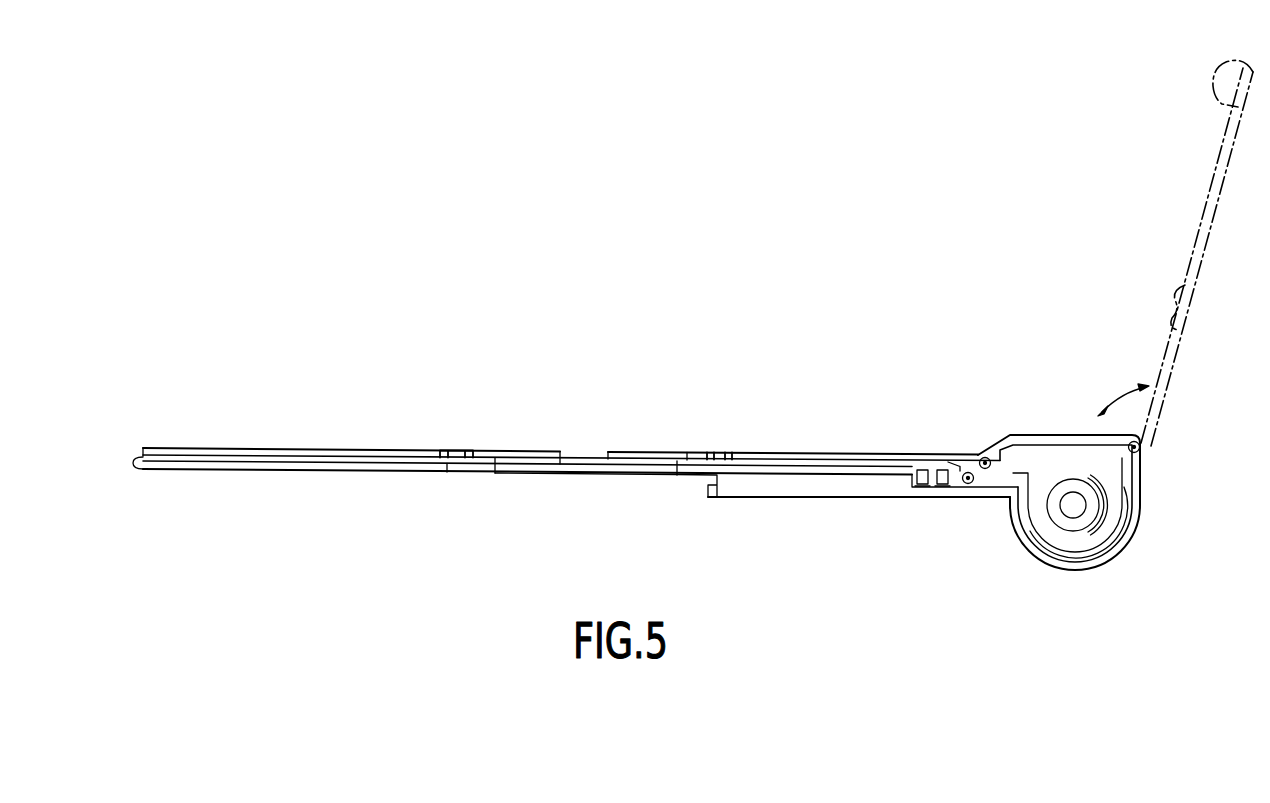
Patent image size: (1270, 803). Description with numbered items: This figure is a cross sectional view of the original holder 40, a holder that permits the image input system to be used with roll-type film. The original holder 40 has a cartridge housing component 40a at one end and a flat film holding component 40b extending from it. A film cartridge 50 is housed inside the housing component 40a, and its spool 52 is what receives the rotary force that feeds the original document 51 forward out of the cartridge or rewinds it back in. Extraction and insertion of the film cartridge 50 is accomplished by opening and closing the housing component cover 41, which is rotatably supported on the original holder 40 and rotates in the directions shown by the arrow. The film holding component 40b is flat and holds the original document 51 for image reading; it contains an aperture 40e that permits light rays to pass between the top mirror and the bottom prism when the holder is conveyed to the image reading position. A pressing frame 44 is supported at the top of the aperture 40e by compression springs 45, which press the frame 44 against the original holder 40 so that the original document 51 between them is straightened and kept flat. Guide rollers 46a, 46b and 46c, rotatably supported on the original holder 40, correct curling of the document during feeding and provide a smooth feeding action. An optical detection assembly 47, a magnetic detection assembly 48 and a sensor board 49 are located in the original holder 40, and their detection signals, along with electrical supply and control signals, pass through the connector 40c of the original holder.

The original holder 40 is at (803, 494).
The cartridge housing component 40a is at (1107, 560).
The film holding component 40b is at (447, 476).
The connector 40c is at (710, 498).
The aperture 40e is at (500, 477).
The housing component cover 41 is at (853, 455).
The pressing frame 44 is at (686, 451).
The compression springs 45 is at (458, 450).
The guide roller 46a is at (982, 457).
The guide roller 46b is at (963, 492).
The guide roller 46c is at (137, 452).
The optical detection assembly 47 is at (918, 490).
The magnetic detection assembly 48 is at (947, 462).
The sensor board 49 is at (933, 490).
The film cartridge 50 is at (1065, 548).
The original document 51 is at (1045, 468).
The spool 52 is at (1083, 505).